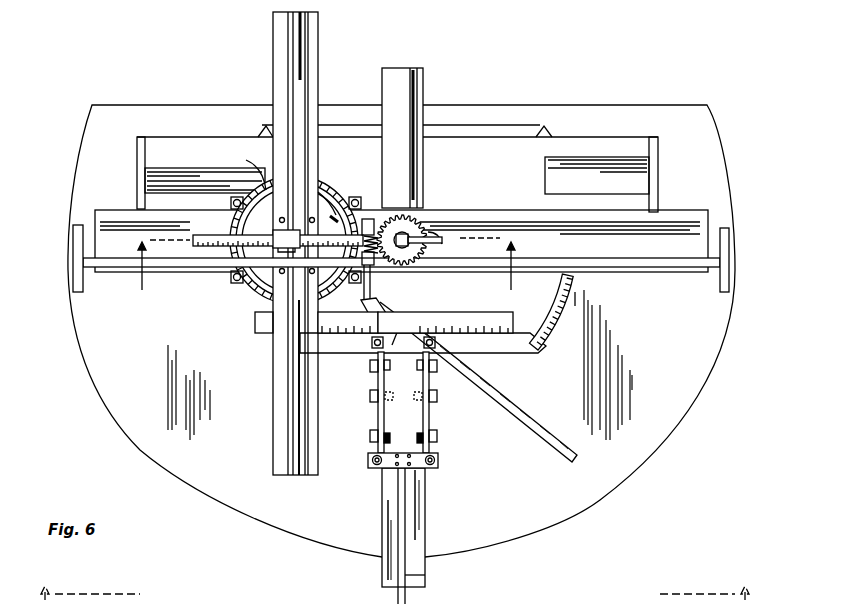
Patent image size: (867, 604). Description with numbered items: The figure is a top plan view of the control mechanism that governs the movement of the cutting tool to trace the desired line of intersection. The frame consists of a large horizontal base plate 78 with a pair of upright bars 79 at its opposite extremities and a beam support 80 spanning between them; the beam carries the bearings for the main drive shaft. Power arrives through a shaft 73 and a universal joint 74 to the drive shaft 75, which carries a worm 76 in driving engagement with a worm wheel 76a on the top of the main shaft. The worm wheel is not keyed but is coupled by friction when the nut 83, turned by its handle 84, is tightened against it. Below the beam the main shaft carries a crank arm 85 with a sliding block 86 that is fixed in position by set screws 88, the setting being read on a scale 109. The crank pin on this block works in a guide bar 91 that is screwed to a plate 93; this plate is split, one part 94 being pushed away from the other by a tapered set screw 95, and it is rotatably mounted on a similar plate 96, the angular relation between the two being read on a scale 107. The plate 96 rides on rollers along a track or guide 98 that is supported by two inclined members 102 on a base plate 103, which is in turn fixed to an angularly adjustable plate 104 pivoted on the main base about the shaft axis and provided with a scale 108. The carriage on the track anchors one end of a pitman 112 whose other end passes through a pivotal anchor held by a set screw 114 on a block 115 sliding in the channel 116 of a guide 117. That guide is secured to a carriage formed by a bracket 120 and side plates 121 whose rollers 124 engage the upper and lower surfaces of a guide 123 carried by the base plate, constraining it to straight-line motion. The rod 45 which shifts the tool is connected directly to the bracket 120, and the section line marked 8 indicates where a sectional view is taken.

The section line 8- 8 is at (324, 278).
The rod 45 is at (405, 573).
The shaft 73 is at (415, 330).
The universal joint 74 is at (364, 302).
The drive shaft 75 is at (376, 290).
The worm 76 is at (412, 230).
The worm wheel 76a is at (428, 228).
The base plate 78 is at (652, 440).
The upright bars 79 is at (80, 266).
The beam support 80 is at (658, 268).
The nut 83 is at (445, 240).
The handle 84 is at (430, 244).
The crank arm 85 is at (332, 215).
The sliding block 86 is at (306, 190).
The set screws 88 is at (233, 278).
The guide bar 91 is at (280, 450).
The plate 93 is at (243, 169).
The plate part 94 is at (350, 196).
The set screw 95 is at (370, 224).
The plate 96 is at (366, 205).
The track or guide 98 is at (672, 215).
The supporting members 102 is at (145, 178).
The base plate 103 is at (598, 140).
The angularly adjustable base plate 104 is at (534, 345).
The scale 107 is at (258, 286).
The scale 108 is at (562, 300).
The scale 109 is at (215, 235).
The pitman 112 is at (520, 386).
The set screw 114 is at (400, 348).
The block 115 is at (346, 335).
The channel 116 is at (542, 340).
The guide 117 is at (490, 332).
The bracket 120 is at (382, 468).
The side plates 121 is at (378, 428).
The guide 123 is at (415, 527).
The rollers 124 is at (418, 446).